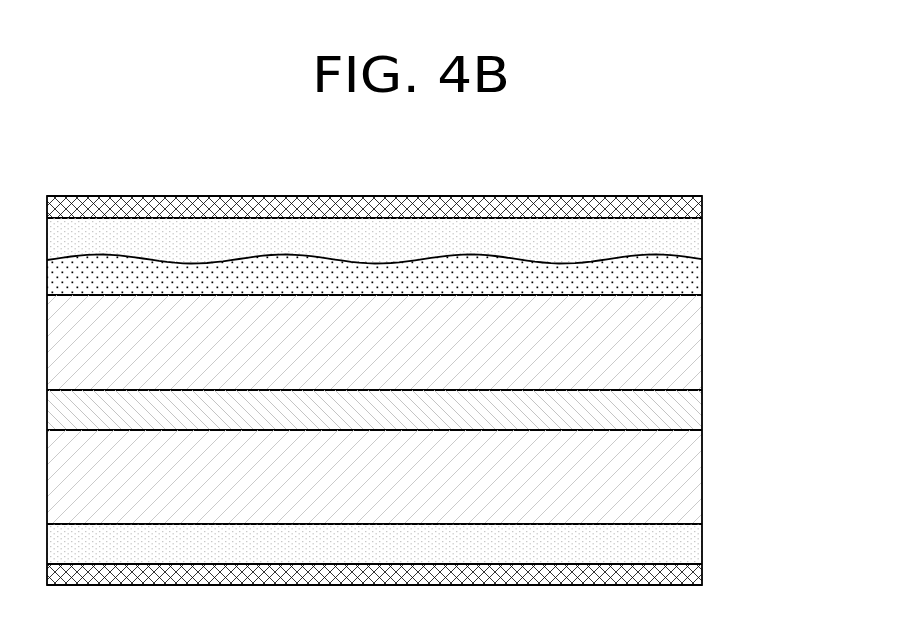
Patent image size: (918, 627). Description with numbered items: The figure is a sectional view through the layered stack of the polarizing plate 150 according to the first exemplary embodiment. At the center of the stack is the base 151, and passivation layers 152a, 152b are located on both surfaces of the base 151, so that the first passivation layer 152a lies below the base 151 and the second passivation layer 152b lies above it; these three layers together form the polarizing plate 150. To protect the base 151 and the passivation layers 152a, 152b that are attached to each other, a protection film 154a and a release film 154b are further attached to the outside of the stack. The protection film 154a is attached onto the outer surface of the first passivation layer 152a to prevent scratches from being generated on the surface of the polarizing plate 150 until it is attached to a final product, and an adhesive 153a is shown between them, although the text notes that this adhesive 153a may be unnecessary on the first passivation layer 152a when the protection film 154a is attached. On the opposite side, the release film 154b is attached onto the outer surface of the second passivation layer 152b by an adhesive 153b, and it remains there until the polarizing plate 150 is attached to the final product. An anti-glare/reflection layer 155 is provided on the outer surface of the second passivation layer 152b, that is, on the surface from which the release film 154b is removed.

The polarizing plate 150 is at (439, 409).
The base 151 is at (702, 411).
The first passivation layer 152a is at (415, 477).
The second passivation layer 152b is at (702, 347).
The adhesive 153a is at (702, 542).
The adhesive 153b is at (702, 238).
The protection film 154a is at (702, 573).
The release film 154b is at (702, 209).
The anti-glare/reflection layer 155 is at (702, 279).